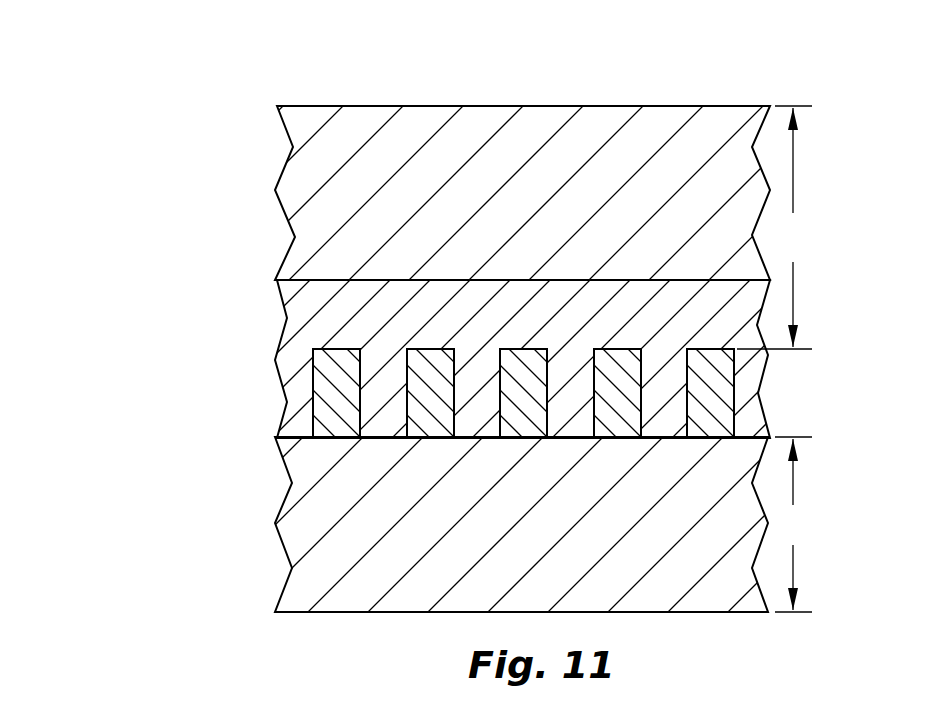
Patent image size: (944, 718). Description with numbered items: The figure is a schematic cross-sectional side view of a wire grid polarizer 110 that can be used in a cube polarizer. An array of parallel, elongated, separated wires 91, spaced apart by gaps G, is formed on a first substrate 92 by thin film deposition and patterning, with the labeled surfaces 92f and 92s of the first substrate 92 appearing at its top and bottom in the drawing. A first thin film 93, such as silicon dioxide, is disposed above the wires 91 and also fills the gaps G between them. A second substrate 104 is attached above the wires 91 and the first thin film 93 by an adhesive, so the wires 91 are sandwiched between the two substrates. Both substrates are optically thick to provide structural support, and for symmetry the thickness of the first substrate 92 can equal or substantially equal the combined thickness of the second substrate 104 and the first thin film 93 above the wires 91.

The wire grid polarizer 110 is at (152, 38).
The second substrate 104 is at (552, 198).
The first thin film 93 is at (542, 324).
The wires 91 is at (351, 405).
The gaps G is at (392, 405).
The first substrate 92 is at (542, 527).
The bottom surface of substrate 92s is at (394, 612).
The top surface of substrate 92f is at (665, 440).